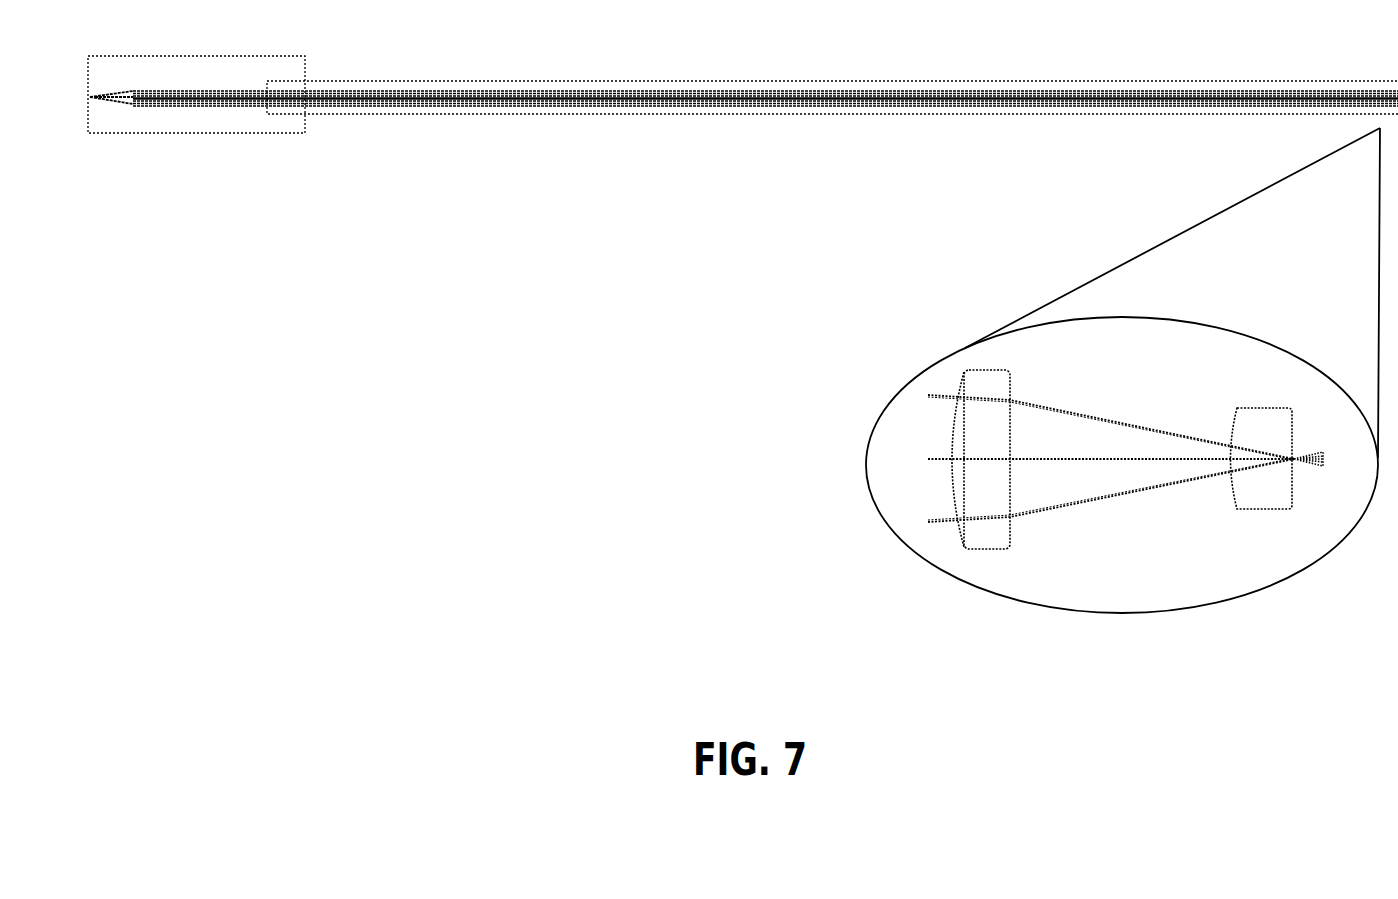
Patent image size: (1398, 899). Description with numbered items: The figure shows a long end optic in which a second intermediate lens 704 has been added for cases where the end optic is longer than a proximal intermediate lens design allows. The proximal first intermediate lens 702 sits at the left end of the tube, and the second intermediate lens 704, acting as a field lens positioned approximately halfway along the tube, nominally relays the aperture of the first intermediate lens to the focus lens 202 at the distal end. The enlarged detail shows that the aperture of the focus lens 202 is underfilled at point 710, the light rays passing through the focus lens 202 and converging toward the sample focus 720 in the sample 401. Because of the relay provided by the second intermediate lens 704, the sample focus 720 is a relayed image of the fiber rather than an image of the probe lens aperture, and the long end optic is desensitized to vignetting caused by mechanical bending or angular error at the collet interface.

The first intermediate lens 702 is at (279, 140).
The second intermediate lens 704 is at (845, 140).
The focus lens 202 is at (1008, 371).
The point 710 is at (941, 547).
The sample focus 720 is at (1309, 483).
The sample 401 is at (1344, 437).